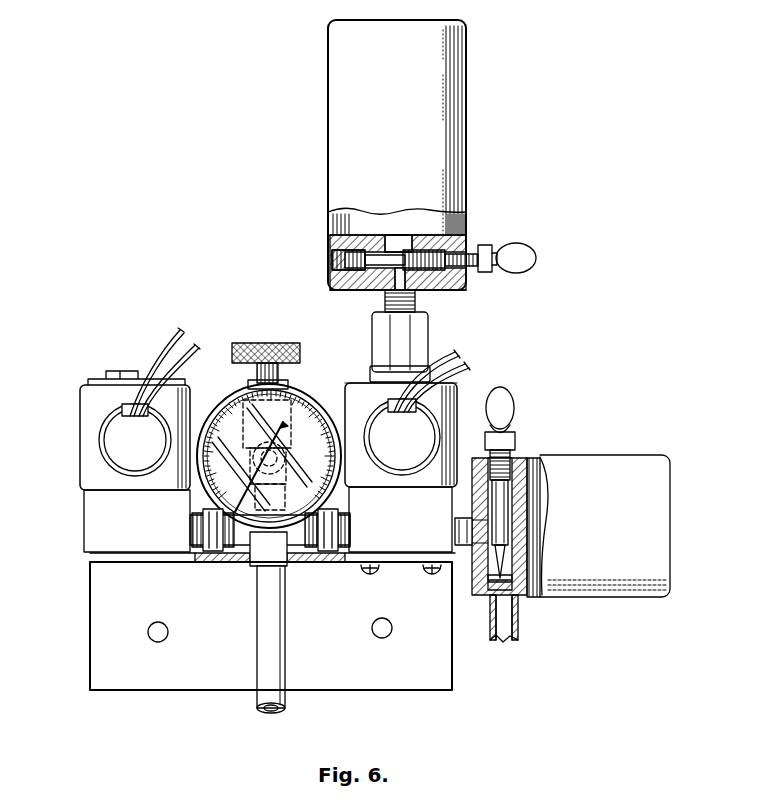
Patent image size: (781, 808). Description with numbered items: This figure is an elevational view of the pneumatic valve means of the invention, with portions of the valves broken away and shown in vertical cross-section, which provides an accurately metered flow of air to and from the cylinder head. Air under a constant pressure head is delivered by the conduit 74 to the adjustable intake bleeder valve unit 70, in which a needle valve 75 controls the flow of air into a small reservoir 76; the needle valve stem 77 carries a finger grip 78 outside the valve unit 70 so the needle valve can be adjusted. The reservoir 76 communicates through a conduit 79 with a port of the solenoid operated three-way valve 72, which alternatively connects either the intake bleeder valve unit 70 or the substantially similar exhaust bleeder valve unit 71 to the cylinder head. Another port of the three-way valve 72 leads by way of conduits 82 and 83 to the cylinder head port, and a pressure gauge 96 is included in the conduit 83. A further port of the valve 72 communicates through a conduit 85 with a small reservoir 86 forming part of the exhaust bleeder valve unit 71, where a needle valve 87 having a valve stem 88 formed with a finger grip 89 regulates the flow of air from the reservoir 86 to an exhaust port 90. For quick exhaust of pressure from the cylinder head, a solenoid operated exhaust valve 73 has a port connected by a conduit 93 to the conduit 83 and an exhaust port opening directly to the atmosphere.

The intake bleeder valve unit 70 is at (626, 467).
The exhaust bleeder valve unit 71 is at (327, 117).
The solenoid operated three-way valve 72 is at (454, 398).
The solenoid operated exhaust valve 73 is at (80, 404).
The conduit 74 is at (517, 615).
The needle valve 75 is at (508, 552).
The reservoir 76 is at (540, 462).
The needle valve stem 77 is at (508, 520).
The finger grip 78 is at (503, 403).
The conduit 79 is at (433, 568).
The conduit 82 is at (334, 553).
The conduit 83 is at (275, 666).
The conduit 85 is at (416, 311).
The reservoir 86 is at (447, 221).
The needle valve 87 is at (372, 280).
The valve stem 88 is at (396, 250).
The finger grip 89 is at (520, 266).
The exhaust port 90 is at (362, 270).
The conduit 93 is at (210, 553).
The pressure gauge 96 is at (318, 398).